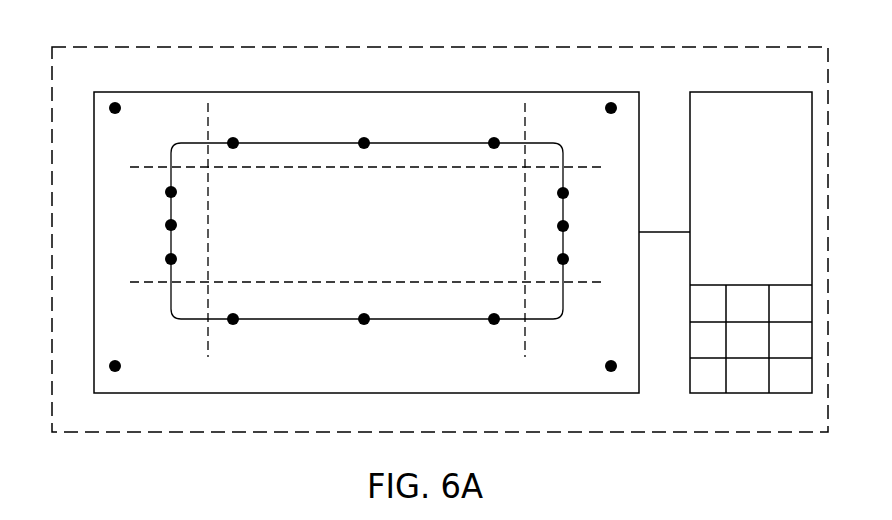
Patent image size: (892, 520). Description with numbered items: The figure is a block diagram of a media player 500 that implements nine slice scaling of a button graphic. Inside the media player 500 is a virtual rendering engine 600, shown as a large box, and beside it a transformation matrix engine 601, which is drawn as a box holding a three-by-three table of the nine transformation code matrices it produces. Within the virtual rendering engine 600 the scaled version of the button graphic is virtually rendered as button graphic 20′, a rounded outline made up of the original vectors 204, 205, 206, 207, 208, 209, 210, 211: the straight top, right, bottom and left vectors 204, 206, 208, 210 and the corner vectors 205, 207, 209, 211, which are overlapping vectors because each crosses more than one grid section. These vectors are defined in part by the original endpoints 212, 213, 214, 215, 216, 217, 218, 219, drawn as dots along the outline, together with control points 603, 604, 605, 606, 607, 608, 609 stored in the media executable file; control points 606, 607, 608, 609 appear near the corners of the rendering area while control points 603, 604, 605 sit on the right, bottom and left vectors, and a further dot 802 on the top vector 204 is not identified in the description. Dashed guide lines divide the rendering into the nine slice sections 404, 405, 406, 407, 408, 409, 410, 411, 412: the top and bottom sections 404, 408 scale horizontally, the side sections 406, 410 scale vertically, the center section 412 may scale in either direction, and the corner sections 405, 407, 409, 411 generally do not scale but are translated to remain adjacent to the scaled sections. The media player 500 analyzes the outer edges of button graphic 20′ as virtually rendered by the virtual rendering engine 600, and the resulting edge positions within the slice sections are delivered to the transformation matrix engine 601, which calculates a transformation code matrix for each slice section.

The button graphic 20′ is at (507, 194).
The vector 204 is at (393, 141).
The vector 205 is at (556, 143).
The vector 206 is at (563, 243).
The vector 207 is at (560, 318).
The vector 208 is at (420, 317).
The vector 209 is at (172, 312).
The vector 210 is at (171, 243).
The vector 211 is at (178, 143).
The end point 212 is at (234, 137).
The end point 213 is at (493, 138).
The end point 214 is at (568, 193).
The end point 215 is at (568, 260).
The end point 216 is at (494, 325).
The end point 217 is at (235, 324).
The end point 218 is at (166, 259).
The end point 219 is at (165, 192).
The slice section 404 is at (378, 117).
The corner slice section 405 is at (616, 144).
The slice section 406 is at (611, 226).
The corner slice section 407 is at (605, 354).
The slice section 408 is at (378, 367).
The corner slice section 409 is at (161, 369).
The slice section 410 is at (150, 226).
The corner slice section 411 is at (168, 129).
The slice section 412 is at (371, 229).
The media player 500 is at (820, 74).
The virtual rendering engine 600 is at (366, 242).
The transformation matrix engine 601 is at (725, 242).
The control point 603 is at (558, 226).
The control point 604 is at (366, 324).
The control point 605 is at (176, 226).
The control point 606 is at (612, 103).
The control point 607 is at (612, 372).
The control point 608 is at (114, 372).
The control point 609 is at (112, 104).
The top edge midpoint 802 is at (366, 148).